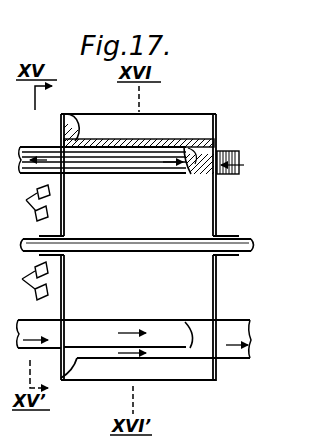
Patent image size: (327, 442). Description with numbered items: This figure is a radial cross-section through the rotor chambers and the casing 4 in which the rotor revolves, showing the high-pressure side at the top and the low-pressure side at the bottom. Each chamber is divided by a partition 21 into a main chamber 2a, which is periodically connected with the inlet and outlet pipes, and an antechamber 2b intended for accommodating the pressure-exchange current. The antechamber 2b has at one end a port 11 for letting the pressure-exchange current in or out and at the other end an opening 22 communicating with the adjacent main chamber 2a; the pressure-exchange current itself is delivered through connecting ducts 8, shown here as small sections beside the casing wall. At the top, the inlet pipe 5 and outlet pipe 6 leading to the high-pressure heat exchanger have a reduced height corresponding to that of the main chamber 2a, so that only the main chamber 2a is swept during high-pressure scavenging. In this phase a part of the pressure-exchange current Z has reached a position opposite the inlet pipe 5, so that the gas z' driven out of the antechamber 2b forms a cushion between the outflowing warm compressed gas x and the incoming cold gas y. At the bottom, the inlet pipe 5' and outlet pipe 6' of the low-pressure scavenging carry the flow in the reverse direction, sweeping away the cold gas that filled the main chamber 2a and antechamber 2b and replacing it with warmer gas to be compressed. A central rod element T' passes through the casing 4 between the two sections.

The casing 4 is at (170, 382).
The outlet pipe 6 is at (102, 147).
The outlet pipe 6' is at (137, 360).
The inlet pipe 5 is at (241, 180).
The inlet pipe 5' is at (40, 374).
The main chamber 2a is at (160, 140).
The antechamber 2b is at (163, 160).
The port 11 is at (78, 131).
The partition 21 is at (137, 138).
The opening 22 is at (215, 146).
The connecting duct 8 is at (28, 242).
The rod T' is at (127, 228).
The pressure-exchange current Z is at (103, 141).
The warm compressed gas x is at (117, 160).
The cold gas y is at (226, 175).
The gas cushion z' is at (189, 191).